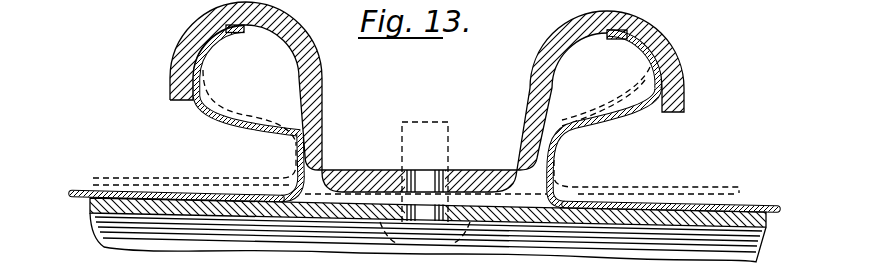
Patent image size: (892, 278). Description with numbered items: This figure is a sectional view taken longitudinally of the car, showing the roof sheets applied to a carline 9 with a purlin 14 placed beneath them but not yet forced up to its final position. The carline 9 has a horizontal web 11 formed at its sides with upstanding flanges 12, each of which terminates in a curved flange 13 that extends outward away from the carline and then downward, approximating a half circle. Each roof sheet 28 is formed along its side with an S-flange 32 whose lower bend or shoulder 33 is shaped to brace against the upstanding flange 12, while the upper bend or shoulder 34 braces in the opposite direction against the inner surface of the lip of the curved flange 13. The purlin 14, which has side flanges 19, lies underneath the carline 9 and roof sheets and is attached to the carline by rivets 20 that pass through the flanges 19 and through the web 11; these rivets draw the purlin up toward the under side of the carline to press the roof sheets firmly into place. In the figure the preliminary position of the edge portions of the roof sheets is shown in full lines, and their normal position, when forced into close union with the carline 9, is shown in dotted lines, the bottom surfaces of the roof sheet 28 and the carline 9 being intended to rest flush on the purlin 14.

The carline 9 is at (623, 102).
The horizontal web 11 is at (349, 170).
The upstanding flange 12 is at (321, 70).
The curved flange 13 is at (203, 24).
The purlin 14 is at (746, 253).
The side flange 19 is at (766, 219).
The rivet 20 is at (452, 132).
The roof sheet 28 is at (78, 191).
The S-flange 32 is at (240, 119).
The lower bend or shoulder 33 is at (298, 153).
The upper bend or shoulder 34 is at (232, 31).